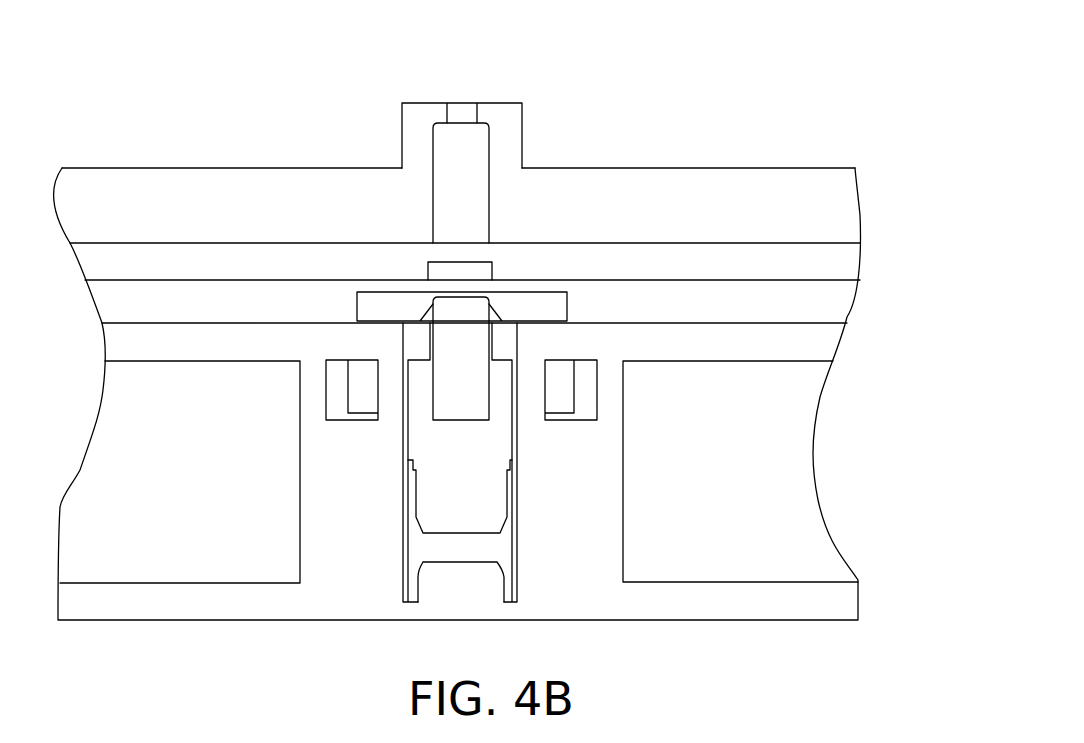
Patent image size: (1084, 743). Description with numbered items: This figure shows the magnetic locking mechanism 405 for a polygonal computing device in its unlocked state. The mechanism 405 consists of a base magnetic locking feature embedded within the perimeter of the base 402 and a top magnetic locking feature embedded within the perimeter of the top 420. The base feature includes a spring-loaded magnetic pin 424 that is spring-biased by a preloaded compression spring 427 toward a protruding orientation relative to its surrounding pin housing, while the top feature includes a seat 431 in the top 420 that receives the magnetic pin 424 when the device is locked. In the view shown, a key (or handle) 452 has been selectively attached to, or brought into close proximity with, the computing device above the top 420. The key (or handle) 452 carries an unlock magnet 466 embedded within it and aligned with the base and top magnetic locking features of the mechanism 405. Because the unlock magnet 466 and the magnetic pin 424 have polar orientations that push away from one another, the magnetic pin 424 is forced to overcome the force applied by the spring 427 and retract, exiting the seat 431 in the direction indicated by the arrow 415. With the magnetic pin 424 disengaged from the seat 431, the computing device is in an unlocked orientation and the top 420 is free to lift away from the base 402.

The magnetic locking mechanism 405 is at (339, 122).
The unlock magnet 466 is at (465, 187).
The arrow 415 is at (463, 279).
The seat 431 is at (478, 273).
The spring-loaded magnetic pin 424 is at (462, 312).
The key (or handle) 452 is at (845, 206).
The top 420 is at (845, 263).
The base 402 is at (845, 606).
The compression spring 427 is at (460, 543).